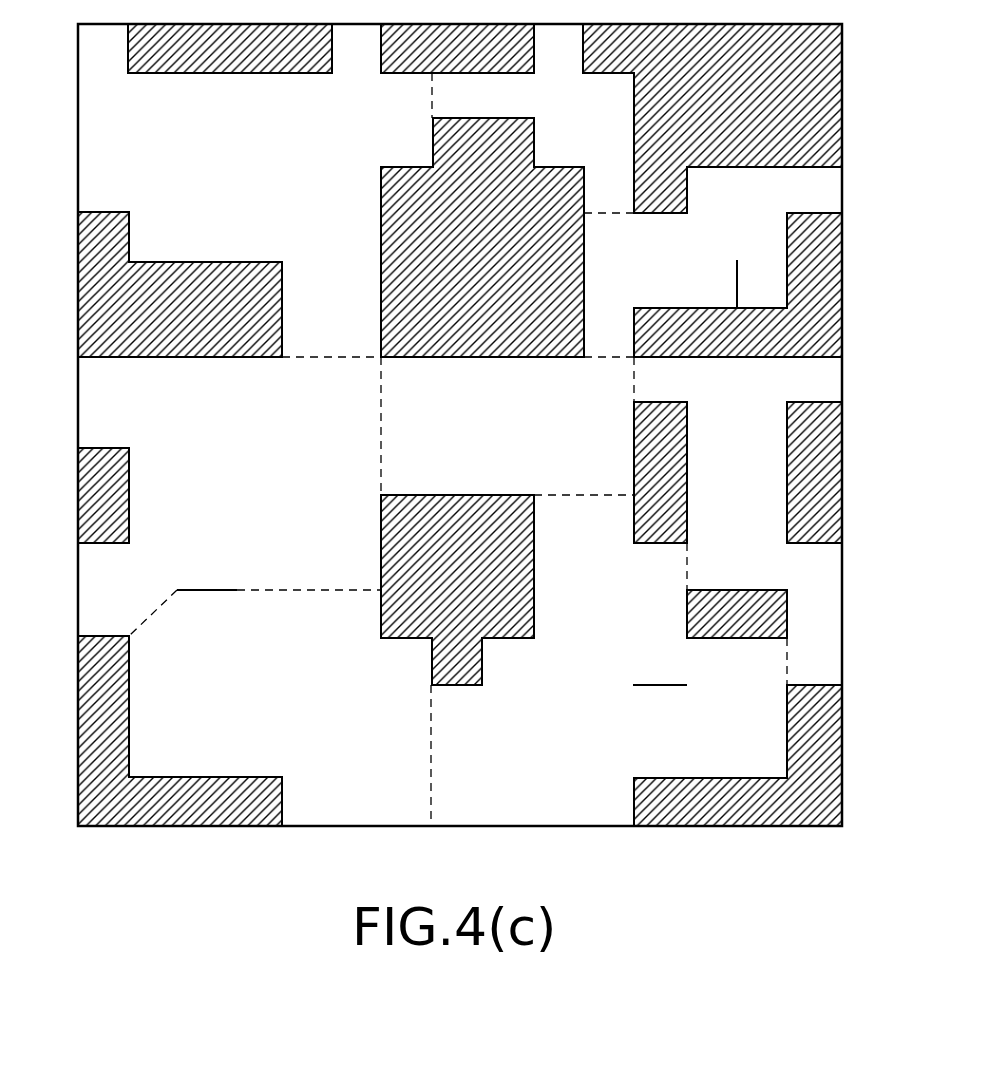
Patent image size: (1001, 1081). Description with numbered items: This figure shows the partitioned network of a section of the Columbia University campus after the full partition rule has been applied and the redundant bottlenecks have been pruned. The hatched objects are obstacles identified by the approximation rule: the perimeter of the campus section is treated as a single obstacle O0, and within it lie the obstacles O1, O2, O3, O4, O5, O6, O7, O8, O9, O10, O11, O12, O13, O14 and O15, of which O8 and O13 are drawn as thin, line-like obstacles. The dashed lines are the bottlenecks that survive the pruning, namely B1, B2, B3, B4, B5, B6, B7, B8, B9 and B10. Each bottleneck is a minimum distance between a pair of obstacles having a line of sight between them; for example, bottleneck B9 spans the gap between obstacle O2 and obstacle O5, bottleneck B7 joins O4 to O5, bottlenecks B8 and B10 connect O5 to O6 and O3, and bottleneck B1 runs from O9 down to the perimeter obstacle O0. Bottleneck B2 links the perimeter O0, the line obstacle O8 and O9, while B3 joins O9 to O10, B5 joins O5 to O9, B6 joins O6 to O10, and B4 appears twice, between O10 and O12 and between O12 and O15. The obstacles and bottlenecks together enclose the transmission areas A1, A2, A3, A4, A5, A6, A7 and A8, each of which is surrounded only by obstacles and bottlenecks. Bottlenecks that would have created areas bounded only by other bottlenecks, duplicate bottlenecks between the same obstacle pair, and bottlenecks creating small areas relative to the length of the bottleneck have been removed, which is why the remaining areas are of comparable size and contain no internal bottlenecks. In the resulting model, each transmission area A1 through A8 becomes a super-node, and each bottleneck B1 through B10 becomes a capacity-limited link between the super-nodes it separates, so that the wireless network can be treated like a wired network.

The perimeter obstacle O0 is at (432, 450).
The obstacle O1 is at (230, 48).
The obstacle O2 is at (457, 48).
The obstacle O3 is at (712, 118).
The obstacle O4 is at (180, 284).
The obstacle O5 is at (482, 237).
The obstacle O6 is at (738, 285).
The obstacle O7 is at (103, 495).
The obstacle O8 is at (207, 573).
The obstacle O9 is at (457, 590).
The obstacle O10 is at (660, 472).
The obstacle O11 is at (814, 472).
The obstacle O12 is at (737, 614).
The obstacle O13 is at (660, 664).
The obstacle O14 is at (180, 731).
The obstacle O15 is at (738, 755).
The transmission area A1 is at (230, 674).
The transmission area A2 is at (582, 706).
The transmission area A3 is at (230, 461).
The transmission area A4 is at (487, 416).
The transmission area A5 is at (732, 473).
The transmission area A6 is at (230, 176).
The transmission area A7 is at (582, 106).
The transmission area A8 is at (687, 251).
The bottleneck B1 is at (407, 755).
The bottleneck B2 is at (244, 594).
The bottleneck B3 is at (584, 474).
The bottleneck B4 is at (712, 614).
The bottleneck B5 is at (357, 426).
The bottleneck B6 is at (610, 379).
The bottleneck B7 is at (331, 334).
The bottleneck B8 is at (609, 334).
The bottleneck B9 is at (407, 95).
The bottleneck B10 is at (610, 234).